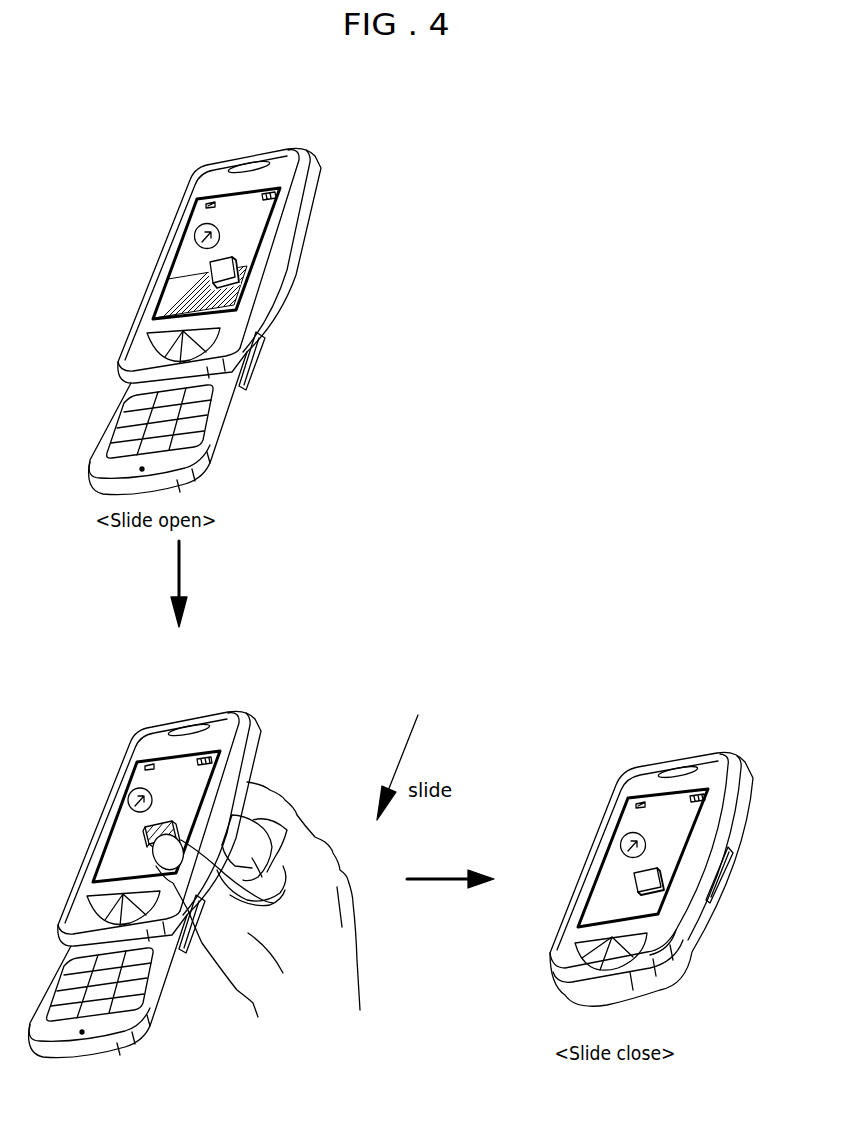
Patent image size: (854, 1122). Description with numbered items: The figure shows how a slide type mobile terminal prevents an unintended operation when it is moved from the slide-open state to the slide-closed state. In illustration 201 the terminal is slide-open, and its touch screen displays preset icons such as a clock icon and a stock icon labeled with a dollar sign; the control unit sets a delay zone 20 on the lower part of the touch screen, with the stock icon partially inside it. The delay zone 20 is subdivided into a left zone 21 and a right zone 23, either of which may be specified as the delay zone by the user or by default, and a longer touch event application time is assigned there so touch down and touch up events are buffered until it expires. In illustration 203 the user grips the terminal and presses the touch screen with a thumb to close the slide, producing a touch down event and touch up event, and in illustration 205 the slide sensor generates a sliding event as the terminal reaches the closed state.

The delay zone 20 is at (387, 283).
The left zone 21 is at (226, 308).
The right zone 23 is at (240, 272).
The illustration 201 is at (219, 129).
The illustration 203 is at (183, 696).
The illustration 205 is at (663, 709).